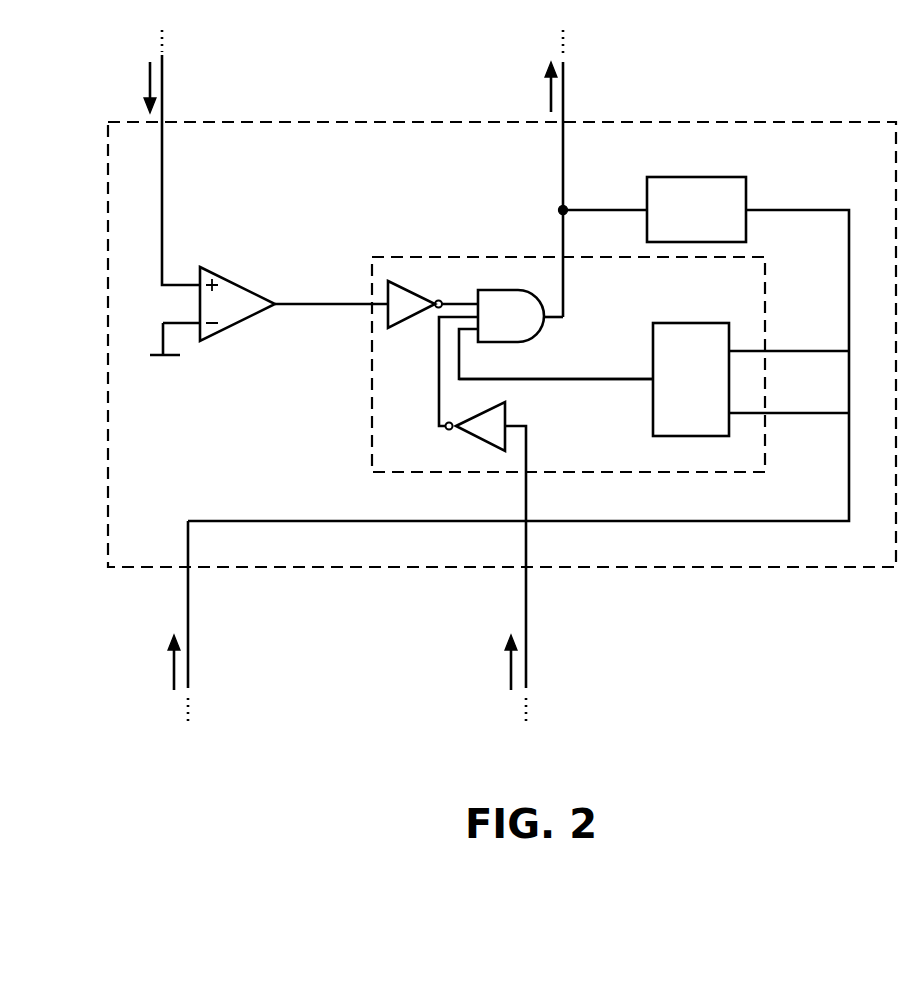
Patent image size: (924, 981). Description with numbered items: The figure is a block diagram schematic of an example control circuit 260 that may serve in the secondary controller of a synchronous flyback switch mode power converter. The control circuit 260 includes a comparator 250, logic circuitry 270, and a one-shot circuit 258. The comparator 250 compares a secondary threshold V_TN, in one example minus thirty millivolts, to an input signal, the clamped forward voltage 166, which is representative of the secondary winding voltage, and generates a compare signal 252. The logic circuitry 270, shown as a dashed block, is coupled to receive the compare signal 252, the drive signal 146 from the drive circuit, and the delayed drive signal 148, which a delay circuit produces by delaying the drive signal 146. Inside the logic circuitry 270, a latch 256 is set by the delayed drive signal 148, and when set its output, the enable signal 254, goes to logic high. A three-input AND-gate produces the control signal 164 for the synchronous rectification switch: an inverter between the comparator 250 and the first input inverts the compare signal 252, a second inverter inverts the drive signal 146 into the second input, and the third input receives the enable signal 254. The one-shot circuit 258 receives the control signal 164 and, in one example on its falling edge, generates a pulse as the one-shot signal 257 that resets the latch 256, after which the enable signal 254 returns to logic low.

The clamped forward voltage V_CF 166 is at (203, 73).
The control signal U_CR 164 is at (598, 80).
The control circuit 260 is at (420, 117).
The logic circuitry 270 is at (412, 252).
The one-shot circuit 258 is at (683, 173).
The one-shot signal U_ONE 257 is at (833, 217).
The latch 256 is at (673, 318).
The enable signal U_SREN 254 is at (625, 387).
The compare signal U_CMP 252 is at (327, 307).
The comparator 250 is at (218, 263).
The delayed drive signal U_DPD 148 is at (225, 652).
The drive signal U_PD 146 is at (558, 652).